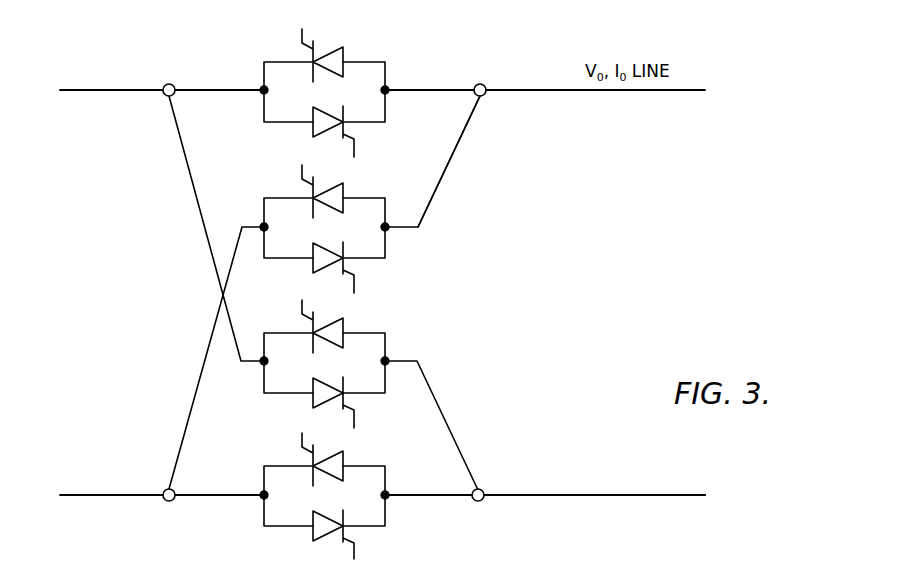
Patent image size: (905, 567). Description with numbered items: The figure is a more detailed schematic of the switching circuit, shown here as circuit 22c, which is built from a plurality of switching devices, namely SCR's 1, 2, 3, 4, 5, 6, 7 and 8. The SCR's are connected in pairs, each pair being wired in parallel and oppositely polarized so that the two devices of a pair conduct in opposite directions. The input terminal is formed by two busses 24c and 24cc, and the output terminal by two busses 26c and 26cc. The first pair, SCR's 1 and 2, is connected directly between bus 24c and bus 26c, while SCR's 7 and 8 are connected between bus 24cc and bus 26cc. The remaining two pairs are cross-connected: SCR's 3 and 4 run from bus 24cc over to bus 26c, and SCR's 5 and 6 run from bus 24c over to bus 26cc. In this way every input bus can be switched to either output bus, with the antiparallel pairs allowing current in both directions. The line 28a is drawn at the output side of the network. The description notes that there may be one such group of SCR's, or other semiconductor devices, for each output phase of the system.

The SCR 1 is at (322, 59).
The SCR 2 is at (315, 126).
The SCR 3 is at (324, 195).
The SCR 4 is at (313, 262).
The SCR 5 is at (320, 325).
The SCR 6 is at (310, 403).
The SCR 7 is at (336, 460).
The SCR 8 is at (320, 538).
The bus 24c is at (170, 84).
The bus 24cc is at (168, 501).
The bus 26c is at (484, 86).
The bus 26cc is at (480, 502).
The circuit 22c is at (578, 205).
The output line 28a is at (660, 558).